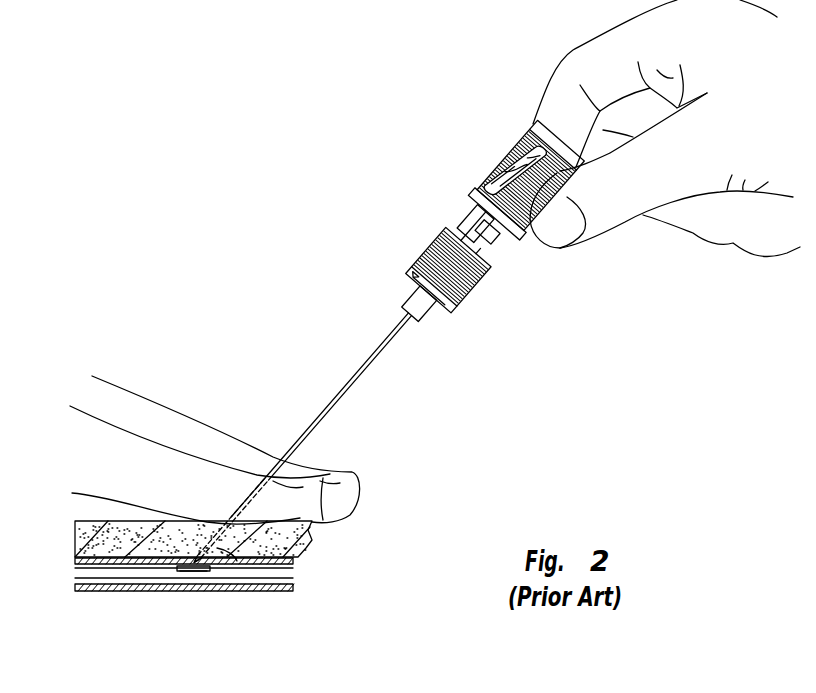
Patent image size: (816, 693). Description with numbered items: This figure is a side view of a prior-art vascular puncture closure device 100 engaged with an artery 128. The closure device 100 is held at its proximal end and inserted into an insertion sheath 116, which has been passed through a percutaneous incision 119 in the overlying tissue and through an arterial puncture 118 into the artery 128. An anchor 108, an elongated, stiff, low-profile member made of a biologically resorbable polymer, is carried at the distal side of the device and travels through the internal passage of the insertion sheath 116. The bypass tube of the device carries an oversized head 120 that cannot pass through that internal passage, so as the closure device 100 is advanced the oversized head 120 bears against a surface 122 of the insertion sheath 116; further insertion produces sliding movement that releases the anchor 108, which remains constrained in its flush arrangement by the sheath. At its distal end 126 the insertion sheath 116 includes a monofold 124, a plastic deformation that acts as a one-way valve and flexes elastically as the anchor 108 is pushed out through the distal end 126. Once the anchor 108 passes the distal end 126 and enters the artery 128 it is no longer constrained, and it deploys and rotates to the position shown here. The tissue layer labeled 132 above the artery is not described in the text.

The vascular puncture closure device 100 is at (467, 188).
The anchor 108 is at (188, 573).
The insertion sheath 116 is at (397, 348).
The arterial puncture 118 is at (188, 553).
The percutaneous incision 119 is at (205, 549).
The oversized head 120 is at (485, 239).
The surface 122 is at (493, 266).
The monofold 124 is at (210, 573).
The distal end 126 is at (216, 550).
The artery 128 is at (297, 563).
The skin layer 132 is at (287, 533).